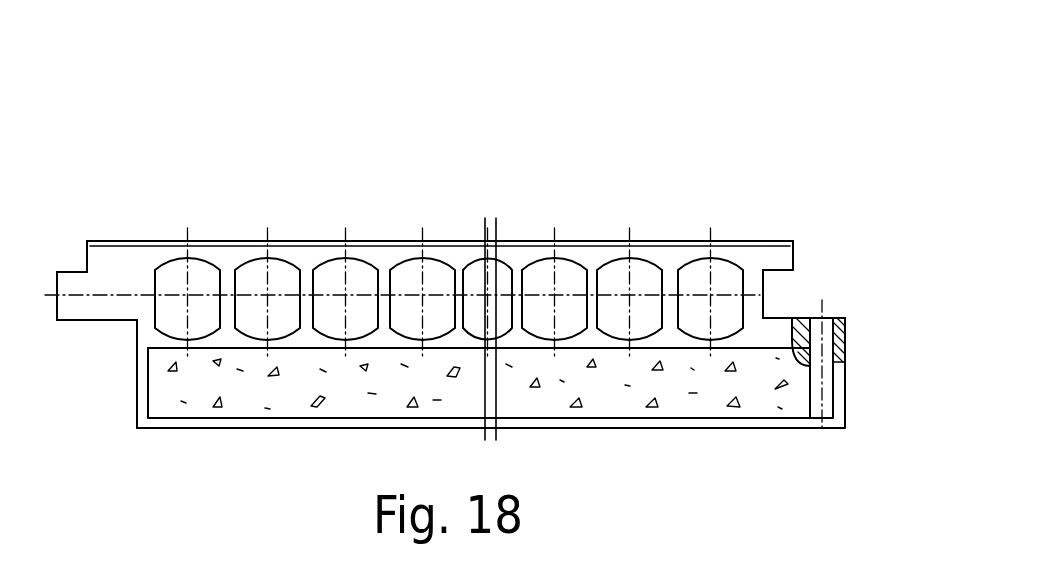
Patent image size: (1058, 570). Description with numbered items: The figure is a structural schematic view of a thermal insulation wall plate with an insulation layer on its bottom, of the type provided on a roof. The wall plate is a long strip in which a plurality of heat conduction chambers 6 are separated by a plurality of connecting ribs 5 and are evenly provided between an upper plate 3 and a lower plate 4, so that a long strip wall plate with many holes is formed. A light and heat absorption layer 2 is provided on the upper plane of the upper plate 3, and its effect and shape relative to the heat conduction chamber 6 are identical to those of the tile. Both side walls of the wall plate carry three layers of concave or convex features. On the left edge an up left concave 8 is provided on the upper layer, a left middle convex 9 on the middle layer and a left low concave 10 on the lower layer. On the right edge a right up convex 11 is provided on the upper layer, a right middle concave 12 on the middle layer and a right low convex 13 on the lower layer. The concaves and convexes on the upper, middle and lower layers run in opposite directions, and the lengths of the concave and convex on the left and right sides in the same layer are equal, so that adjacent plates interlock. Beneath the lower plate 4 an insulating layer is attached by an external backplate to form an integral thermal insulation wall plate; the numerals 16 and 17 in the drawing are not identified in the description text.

The light and heat absorption layer 2 is at (281, 243).
The upper plate 3 is at (350, 253).
The lower plate 4 is at (422, 350).
The connecting rib 5 is at (517, 303).
The heat conduction chamber 6 is at (617, 283).
The up left concave 8 is at (77, 258).
The left middle convex 9 is at (62, 288).
The left low concave 10 is at (105, 335).
The right up convex 11 is at (780, 262).
The right middle concave 12 is at (773, 303).
The right low convex 13 is at (760, 395).
The anchor head 16 is at (800, 352).
The bolt 17 is at (837, 378).